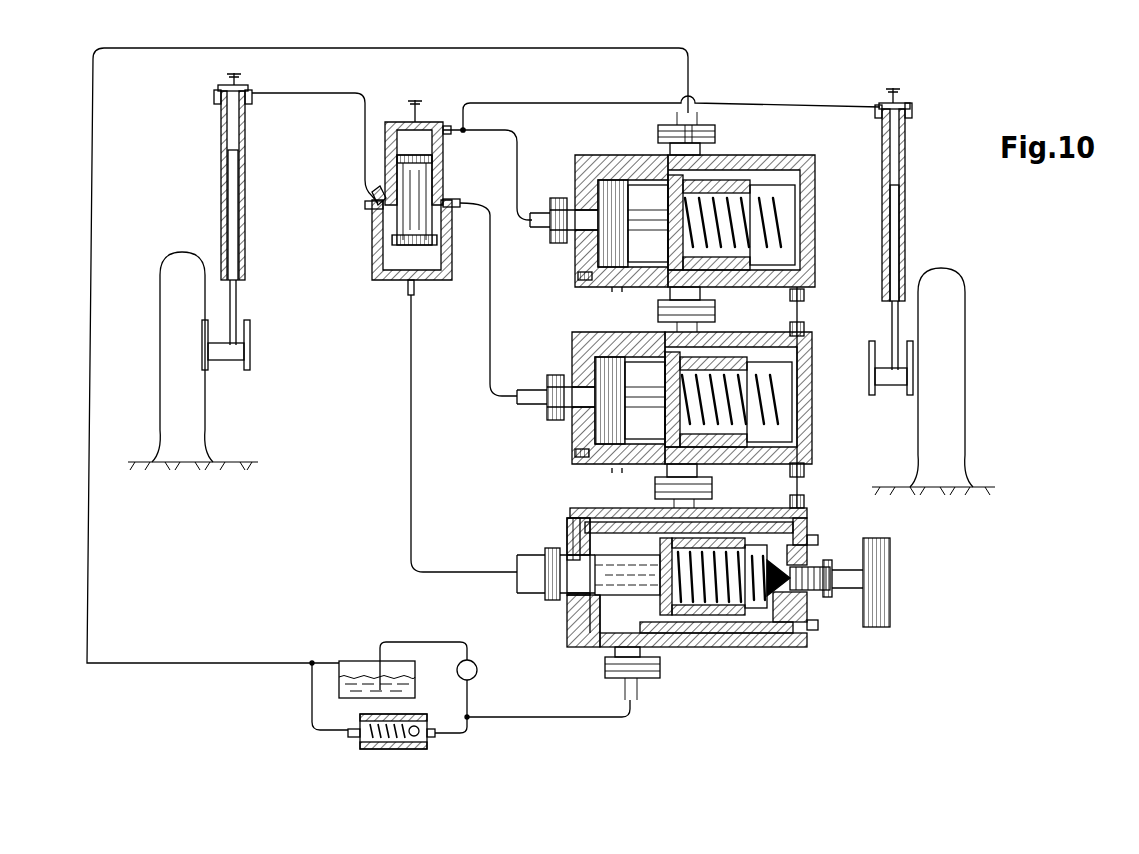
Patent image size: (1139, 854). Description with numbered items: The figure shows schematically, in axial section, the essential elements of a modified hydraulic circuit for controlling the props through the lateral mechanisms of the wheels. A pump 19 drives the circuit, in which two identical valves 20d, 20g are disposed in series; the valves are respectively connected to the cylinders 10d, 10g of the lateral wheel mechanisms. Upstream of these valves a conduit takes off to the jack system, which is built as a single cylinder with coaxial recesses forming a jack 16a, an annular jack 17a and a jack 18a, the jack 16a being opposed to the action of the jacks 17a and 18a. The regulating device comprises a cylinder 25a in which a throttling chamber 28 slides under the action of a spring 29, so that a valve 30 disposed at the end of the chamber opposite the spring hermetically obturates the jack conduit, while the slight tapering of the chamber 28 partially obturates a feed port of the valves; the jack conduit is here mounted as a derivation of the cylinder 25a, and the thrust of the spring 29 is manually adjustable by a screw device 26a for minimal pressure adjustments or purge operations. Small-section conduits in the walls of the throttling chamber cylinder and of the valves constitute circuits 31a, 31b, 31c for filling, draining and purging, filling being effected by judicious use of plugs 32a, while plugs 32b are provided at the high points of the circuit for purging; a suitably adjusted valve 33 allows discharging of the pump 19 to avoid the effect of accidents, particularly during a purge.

The cylinder of lateral wheel mechanism 10d is at (906, 227).
The cylinder of lateral wheel mechanism 10g is at (222, 195).
The jack 16a is at (385, 264).
The annular jack 17a is at (388, 236).
The jack 18a is at (403, 137).
The pump 19 is at (477, 668).
The valve 20d is at (862, 228).
The valve 20g is at (822, 397).
The cylinder 25a is at (721, 604).
The screw device 26a is at (893, 605).
The throttling chamber 28 is at (698, 633).
The spring 29 is at (760, 610).
The valve 30 is at (582, 598).
The circuit 31a is at (618, 292).
The circuit 31b is at (805, 274).
The circuit 31c is at (568, 530).
The plug 32a is at (578, 275).
The plug 32b is at (230, 78).
The valve 33 is at (350, 741).